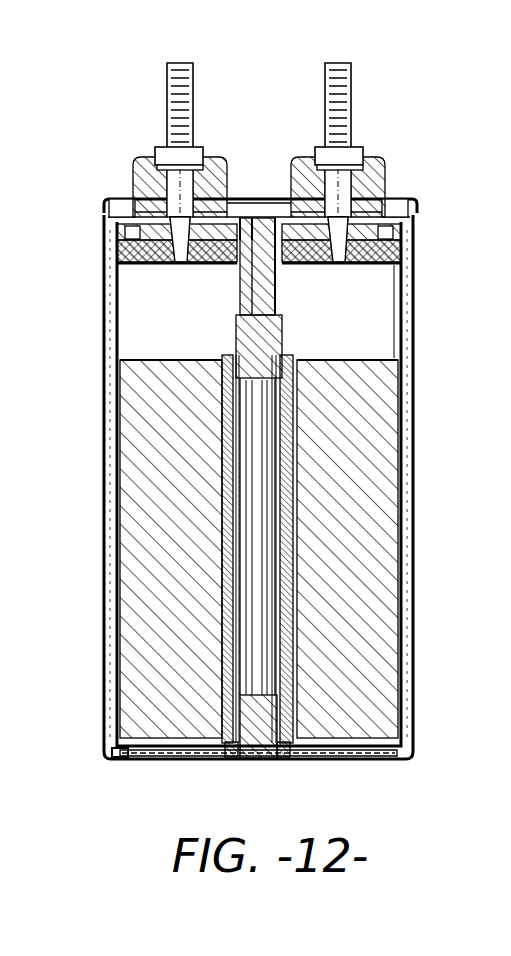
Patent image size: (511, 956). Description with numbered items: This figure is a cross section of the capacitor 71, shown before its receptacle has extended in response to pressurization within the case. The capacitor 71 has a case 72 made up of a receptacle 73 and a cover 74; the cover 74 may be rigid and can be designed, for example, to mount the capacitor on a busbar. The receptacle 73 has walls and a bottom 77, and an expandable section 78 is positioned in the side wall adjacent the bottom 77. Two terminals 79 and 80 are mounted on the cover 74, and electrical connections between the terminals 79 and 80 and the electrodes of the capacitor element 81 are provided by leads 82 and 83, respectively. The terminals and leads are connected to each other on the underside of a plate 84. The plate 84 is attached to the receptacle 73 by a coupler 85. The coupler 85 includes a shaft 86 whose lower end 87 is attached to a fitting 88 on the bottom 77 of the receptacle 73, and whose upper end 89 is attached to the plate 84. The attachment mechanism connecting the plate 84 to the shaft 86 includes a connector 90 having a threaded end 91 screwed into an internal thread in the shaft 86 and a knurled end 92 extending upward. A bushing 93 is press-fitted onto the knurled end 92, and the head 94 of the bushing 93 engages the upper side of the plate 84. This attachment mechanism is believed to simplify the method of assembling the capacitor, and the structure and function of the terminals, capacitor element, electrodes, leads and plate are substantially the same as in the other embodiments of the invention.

The capacitor 71 is at (418, 505).
The case 72 is at (418, 560).
The receptacle 73 is at (416, 660).
The cover 74 is at (406, 206).
The bottom 77 is at (375, 760).
The expandable section 78 is at (122, 754).
The terminal 79 is at (150, 148).
The terminal 80 is at (368, 148).
The capacitor element 81 is at (137, 408).
The lead 82 is at (158, 315).
The lead 83 is at (400, 292).
The plate 84 is at (118, 236).
The coupler 85 is at (260, 503).
The shaft 86 is at (252, 602).
The lower end 87 is at (235, 667).
The fitting 88 is at (252, 725).
The upper end 89 is at (290, 275).
The connector 90 is at (285, 337).
The threaded end 91 is at (250, 337).
The knurled end 92 is at (250, 270).
The bushing 93 is at (238, 222).
The head 94 is at (257, 228).